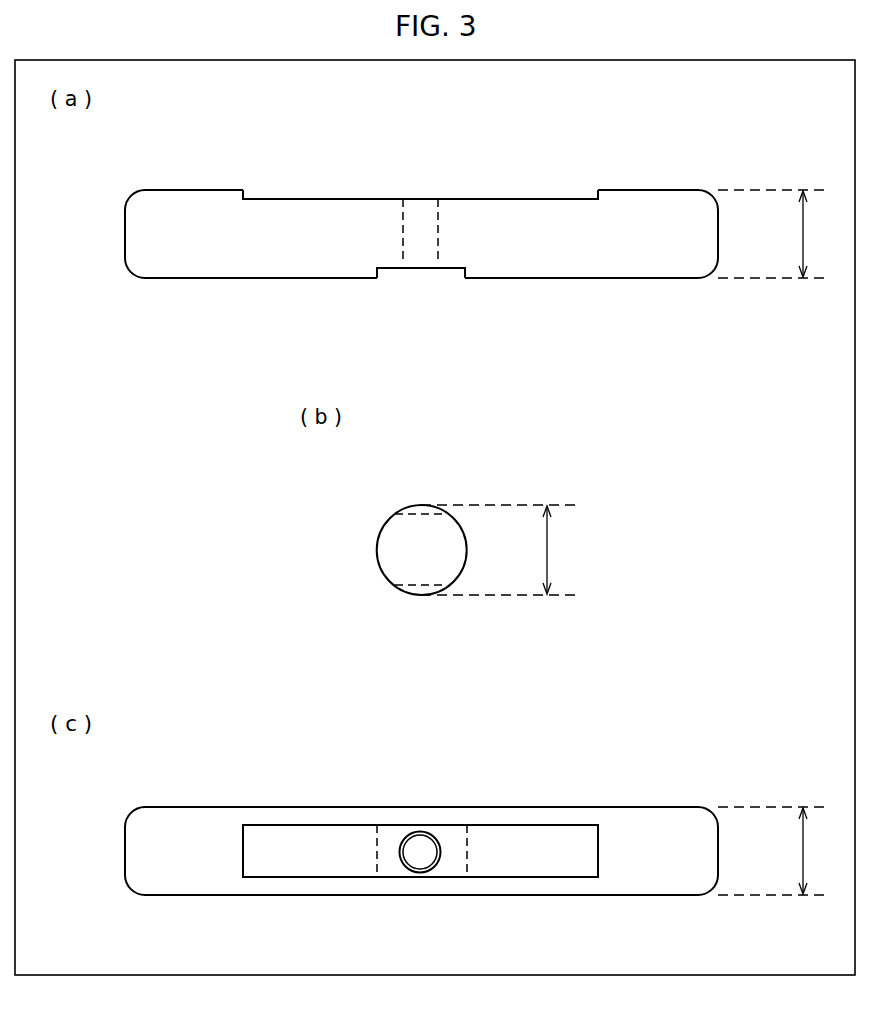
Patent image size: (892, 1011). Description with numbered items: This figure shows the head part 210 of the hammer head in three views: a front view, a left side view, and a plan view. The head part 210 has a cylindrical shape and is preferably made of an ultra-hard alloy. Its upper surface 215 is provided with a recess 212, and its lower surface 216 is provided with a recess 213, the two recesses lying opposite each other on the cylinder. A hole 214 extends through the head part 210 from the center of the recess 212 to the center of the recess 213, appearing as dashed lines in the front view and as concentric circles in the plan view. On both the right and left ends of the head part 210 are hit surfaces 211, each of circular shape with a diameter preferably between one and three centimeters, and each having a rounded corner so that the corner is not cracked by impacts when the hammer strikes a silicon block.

The head part 210 is at (723, 160).
The hit surface 211 is at (125, 233).
The recess 212 is at (556, 199).
The recess 213 is at (450, 268).
The hole 214 is at (413, 206).
The upper surface 215 is at (191, 190).
The lower surface 216 is at (191, 278).